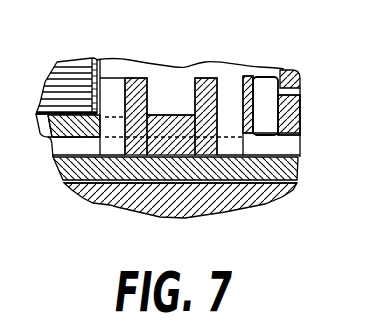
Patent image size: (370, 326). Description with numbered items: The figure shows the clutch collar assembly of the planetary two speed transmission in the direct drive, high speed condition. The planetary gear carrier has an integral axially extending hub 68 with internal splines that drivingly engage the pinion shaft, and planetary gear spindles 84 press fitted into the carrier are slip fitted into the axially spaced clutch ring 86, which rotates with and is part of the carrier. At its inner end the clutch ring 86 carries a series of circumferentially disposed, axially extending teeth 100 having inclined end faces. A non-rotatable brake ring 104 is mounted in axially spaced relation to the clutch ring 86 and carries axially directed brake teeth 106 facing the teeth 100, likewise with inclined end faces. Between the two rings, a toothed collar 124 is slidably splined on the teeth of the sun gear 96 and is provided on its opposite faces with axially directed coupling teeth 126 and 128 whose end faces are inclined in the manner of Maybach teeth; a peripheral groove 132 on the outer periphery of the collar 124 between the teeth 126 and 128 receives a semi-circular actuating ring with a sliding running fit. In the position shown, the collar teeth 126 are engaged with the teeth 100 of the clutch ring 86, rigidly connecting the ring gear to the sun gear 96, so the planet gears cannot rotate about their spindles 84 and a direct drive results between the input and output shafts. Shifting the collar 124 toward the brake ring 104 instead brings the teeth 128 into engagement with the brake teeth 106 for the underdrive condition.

The hub 68 is at (117, 208).
The planetary gear spindle 84 is at (63, 82).
The clutch ring 86 is at (47, 137).
The sun gear 96 is at (53, 158).
The teeth 100 is at (100, 83).
The brake ring 104 is at (299, 117).
The brake teeth 106 is at (267, 86).
The toothed collar 124 is at (147, 87).
The coupling teeth 126 is at (118, 85).
The coupling teeth 128 is at (231, 80).
The peripheral groove 132 is at (187, 81).